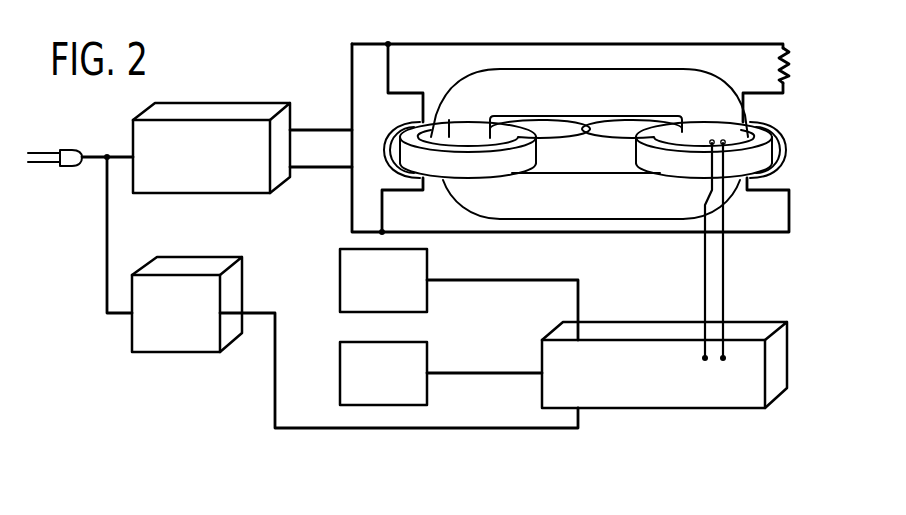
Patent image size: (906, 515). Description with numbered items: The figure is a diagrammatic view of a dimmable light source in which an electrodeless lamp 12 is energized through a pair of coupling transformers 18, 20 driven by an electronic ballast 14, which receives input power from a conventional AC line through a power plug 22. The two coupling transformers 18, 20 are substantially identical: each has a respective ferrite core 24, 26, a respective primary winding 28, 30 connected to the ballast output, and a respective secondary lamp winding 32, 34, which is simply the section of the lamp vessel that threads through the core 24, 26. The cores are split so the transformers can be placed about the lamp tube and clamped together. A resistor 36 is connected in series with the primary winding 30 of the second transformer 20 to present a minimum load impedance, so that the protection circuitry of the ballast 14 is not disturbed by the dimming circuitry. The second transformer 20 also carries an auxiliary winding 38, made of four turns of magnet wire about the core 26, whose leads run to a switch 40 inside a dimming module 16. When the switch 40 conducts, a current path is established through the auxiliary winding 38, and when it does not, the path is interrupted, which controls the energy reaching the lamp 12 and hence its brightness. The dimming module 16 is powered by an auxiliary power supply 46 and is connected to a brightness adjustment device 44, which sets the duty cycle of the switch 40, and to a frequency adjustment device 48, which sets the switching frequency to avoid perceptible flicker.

The electrodeless lamp 12 is at (551, 54).
The ballast 14 is at (224, 103).
The dimming module 16 is at (652, 409).
The coupling transformer 18 is at (541, 156).
The coupling transformer 20 is at (627, 143).
The power plug 22 is at (78, 148).
The ferrite core 24 is at (436, 122).
The ferrite core 26 is at (732, 96).
The primary winding 28 is at (384, 147).
The primary winding 30 is at (787, 155).
The secondary lamp winding 32 is at (449, 135).
The secondary lamp winding 34 is at (712, 140).
The resistor 36 is at (786, 77).
The auxiliary winding 38 is at (715, 205).
The switch 40 is at (712, 360).
The brightness adjustment device 44 is at (339, 367).
The auxiliary power supply 46 is at (195, 256).
The frequency adjustment device 48 is at (339, 270).